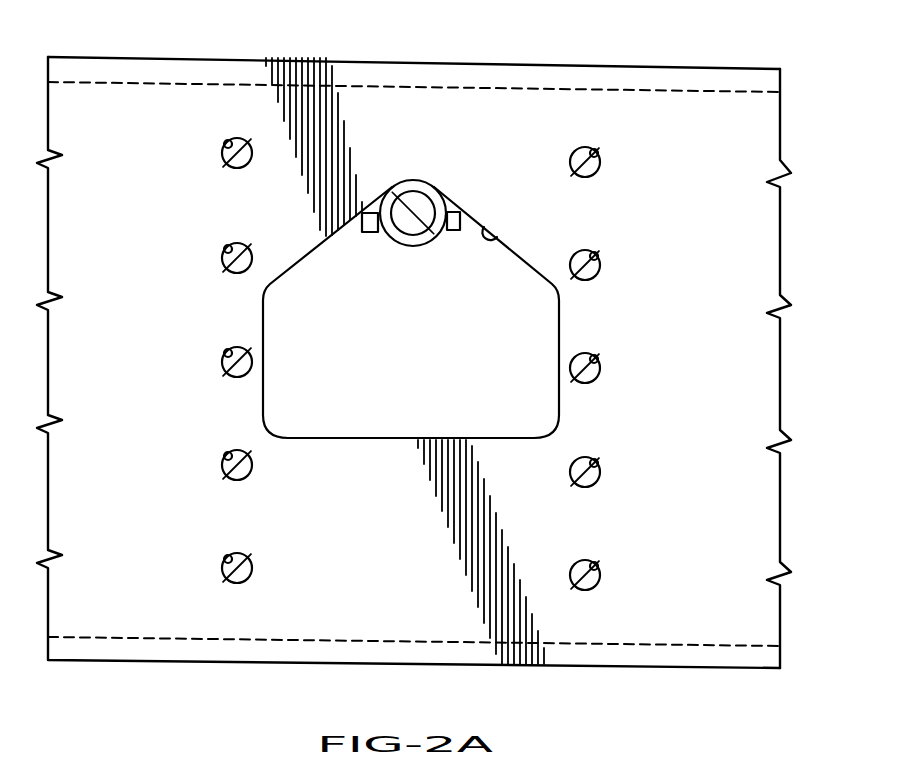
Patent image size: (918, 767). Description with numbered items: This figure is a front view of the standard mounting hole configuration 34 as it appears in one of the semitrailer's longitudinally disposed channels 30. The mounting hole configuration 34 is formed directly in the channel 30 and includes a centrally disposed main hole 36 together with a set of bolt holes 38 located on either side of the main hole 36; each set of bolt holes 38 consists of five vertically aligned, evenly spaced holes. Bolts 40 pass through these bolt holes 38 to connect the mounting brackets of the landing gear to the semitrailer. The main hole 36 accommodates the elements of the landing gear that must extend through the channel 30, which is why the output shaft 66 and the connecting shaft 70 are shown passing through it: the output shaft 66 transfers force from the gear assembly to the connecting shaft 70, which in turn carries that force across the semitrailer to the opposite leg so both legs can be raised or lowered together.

The channel 30 is at (415, 75).
The standard mounting hole configuration 34 is at (500, 296).
The main hole 36 is at (497, 243).
The bolt holes 38 is at (224, 144).
The bolts 40 is at (241, 166).
The output shaft 66 is at (415, 198).
The connecting shaft 70 is at (413, 247).